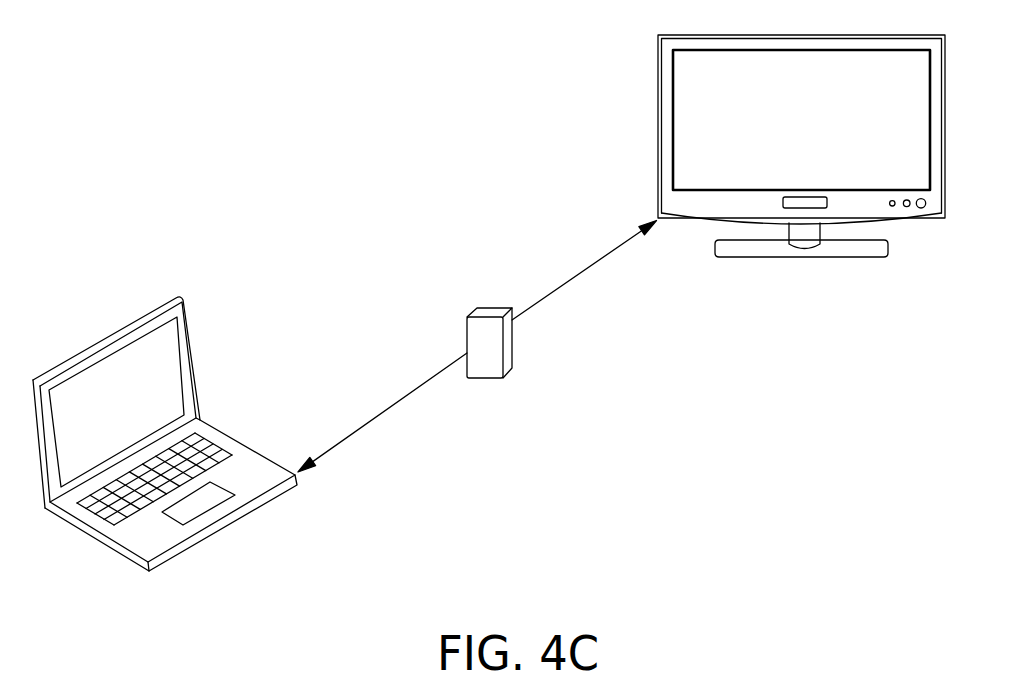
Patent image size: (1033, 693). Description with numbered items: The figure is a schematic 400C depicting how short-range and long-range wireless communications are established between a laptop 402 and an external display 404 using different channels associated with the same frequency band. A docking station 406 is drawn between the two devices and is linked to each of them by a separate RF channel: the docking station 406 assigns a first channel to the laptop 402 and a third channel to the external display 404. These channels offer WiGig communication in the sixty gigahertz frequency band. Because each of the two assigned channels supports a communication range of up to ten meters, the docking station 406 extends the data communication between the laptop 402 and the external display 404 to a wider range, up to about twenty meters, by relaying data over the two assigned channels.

The schematic 400C is at (489, 323).
The laptop 402 is at (263, 505).
The external display 404 is at (708, 226).
The docking station 406 is at (510, 371).